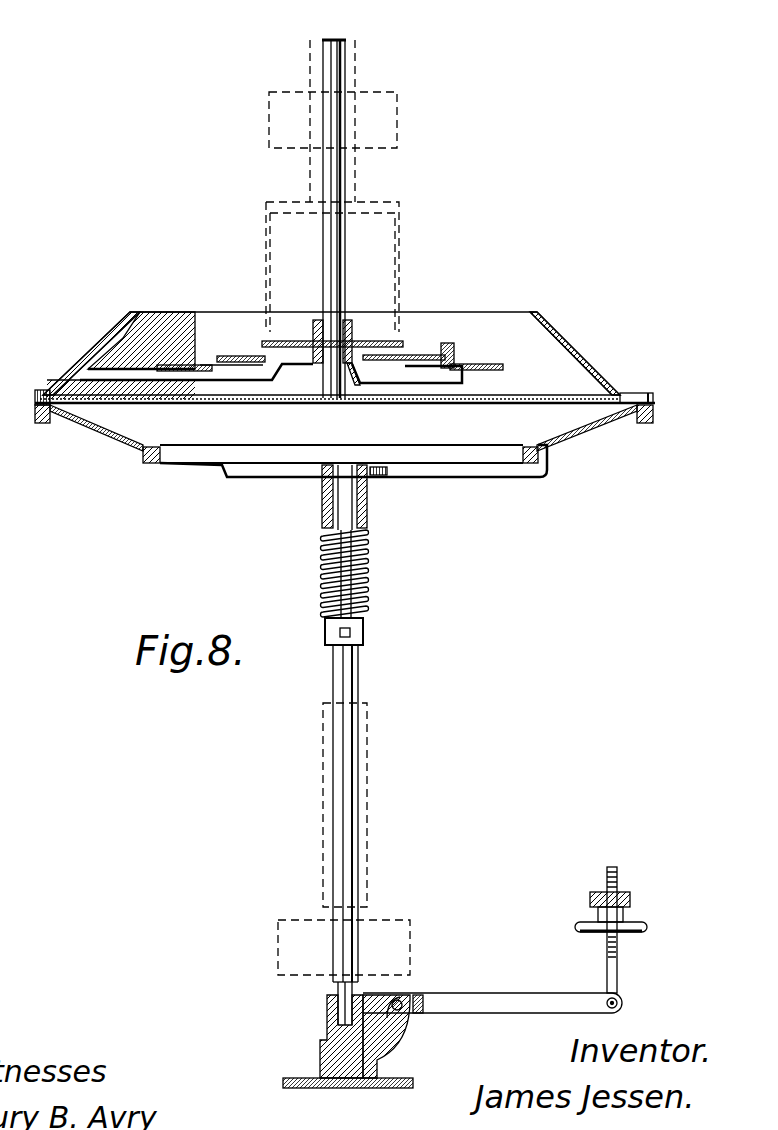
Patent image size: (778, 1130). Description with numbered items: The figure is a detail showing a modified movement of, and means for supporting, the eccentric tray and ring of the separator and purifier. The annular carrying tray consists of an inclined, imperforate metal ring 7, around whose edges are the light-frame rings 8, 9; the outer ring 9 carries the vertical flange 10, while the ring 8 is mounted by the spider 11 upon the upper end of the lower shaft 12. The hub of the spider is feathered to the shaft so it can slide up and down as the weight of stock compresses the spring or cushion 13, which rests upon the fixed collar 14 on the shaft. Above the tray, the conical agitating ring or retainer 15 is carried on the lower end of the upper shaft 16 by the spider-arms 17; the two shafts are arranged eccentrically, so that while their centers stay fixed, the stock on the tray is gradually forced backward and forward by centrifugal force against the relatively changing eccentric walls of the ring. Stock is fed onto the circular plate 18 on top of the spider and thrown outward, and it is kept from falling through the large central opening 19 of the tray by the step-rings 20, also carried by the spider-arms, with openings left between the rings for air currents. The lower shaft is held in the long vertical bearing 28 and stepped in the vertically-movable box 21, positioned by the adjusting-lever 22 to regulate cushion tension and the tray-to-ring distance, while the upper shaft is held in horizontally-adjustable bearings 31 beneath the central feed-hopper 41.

The inclined imperforate metal ring 7 is at (112, 435).
The light-frame ring 8 is at (148, 464).
The light-frame ring 9 is at (40, 424).
The vertical flange 10 is at (647, 403).
The spider 11 is at (398, 472).
The shaft 12 is at (352, 672).
The spring or cushion 13 is at (366, 582).
The fixed collar 14 is at (364, 632).
The agitating ring or retainer 15 is at (570, 338).
The shaft 16 is at (341, 260).
The spider-arms 17 is at (190, 377).
The circular plate 18 is at (402, 338).
The central opening 19 is at (215, 440).
The step-rings 20 is at (483, 361).
The vertically-movable box 21 is at (327, 1026).
The adjusting-lever 22 is at (492, 1007).
The vertical bearing 28 is at (360, 807).
The horizontally-adjustable bearings 31 is at (350, 68).
The central feed-hopper 41 is at (390, 220).